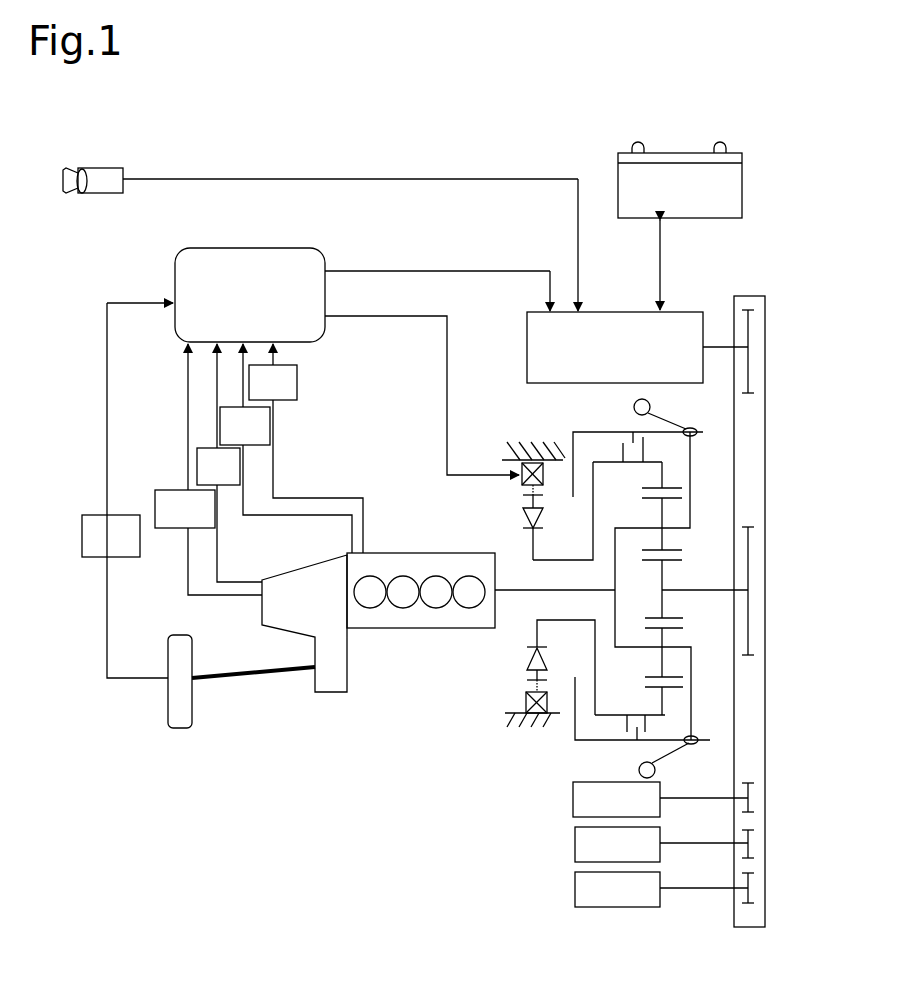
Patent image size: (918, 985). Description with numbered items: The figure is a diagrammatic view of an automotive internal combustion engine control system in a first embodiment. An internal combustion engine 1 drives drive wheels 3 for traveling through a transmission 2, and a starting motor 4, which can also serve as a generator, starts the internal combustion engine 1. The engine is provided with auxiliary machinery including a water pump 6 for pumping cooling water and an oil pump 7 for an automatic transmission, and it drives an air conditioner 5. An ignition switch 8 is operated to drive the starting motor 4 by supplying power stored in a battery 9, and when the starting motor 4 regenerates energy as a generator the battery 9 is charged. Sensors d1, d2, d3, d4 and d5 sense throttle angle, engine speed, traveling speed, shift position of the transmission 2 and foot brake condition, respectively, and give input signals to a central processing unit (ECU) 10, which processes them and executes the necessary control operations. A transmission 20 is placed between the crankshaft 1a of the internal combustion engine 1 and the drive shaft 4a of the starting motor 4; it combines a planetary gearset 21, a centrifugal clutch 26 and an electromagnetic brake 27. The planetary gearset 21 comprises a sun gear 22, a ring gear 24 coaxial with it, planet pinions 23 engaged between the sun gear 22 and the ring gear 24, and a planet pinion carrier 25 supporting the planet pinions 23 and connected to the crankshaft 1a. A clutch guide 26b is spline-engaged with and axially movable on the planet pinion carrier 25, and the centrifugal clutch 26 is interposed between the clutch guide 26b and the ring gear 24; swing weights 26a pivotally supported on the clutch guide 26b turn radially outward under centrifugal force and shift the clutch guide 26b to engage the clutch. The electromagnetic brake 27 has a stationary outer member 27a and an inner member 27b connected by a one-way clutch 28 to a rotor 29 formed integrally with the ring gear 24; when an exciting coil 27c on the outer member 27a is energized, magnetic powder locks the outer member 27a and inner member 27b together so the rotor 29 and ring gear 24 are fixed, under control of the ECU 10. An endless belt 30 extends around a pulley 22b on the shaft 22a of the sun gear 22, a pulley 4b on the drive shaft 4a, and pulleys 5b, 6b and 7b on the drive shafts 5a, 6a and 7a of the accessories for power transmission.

The internal combustion engine 1 is at (415, 630).
The crankshaft 1a is at (555, 590).
The transmission 2 is at (297, 568).
The drive wheels 3 is at (178, 730).
The starting motor 4 is at (613, 311).
The drive shaft 4a is at (717, 343).
The pulley 4b is at (750, 327).
The air conditioner 5 is at (572, 800).
The drive shaft 5a is at (697, 794).
The pulley 5b is at (755, 802).
The water pump 6 is at (572, 845).
The drive shaft 6a is at (693, 841).
The pulley 6b is at (755, 848).
The oil pump 7 is at (572, 892).
The drive shaft 7a is at (693, 890).
The pulley 7b is at (755, 893).
The ignition switch 8 is at (104, 166).
The battery 9 is at (743, 190).
The central processing unit (ECU) 10 is at (257, 247).
The transmission 20 is at (500, 727).
The planetary gearset 21 is at (597, 424).
The sun gear 22 is at (665, 606).
The shaft 22a is at (712, 588).
The pulley 22b is at (752, 635).
The planet pinions 23 is at (664, 543).
The ring gear 24 is at (660, 473).
The planet pinion carrier 25 is at (630, 648).
The centrifugal clutch 26 is at (620, 449).
The swing weights 26a is at (651, 405).
The clutch guide 26b is at (603, 743).
The electromagnetic brake 27 is at (512, 493).
The outer member 27a is at (504, 468).
The inner member 27b is at (527, 499).
The exciting coil 27c is at (523, 703).
The one-way clutch 28 is at (548, 520).
The rotor 29 is at (563, 623).
The endless belt 30 is at (766, 495).
The sensor d1 is at (297, 383).
The sensor d2 is at (270, 425).
The sensor d3 is at (240, 468).
The sensor d4 is at (162, 490).
The sensor d5 is at (100, 513).